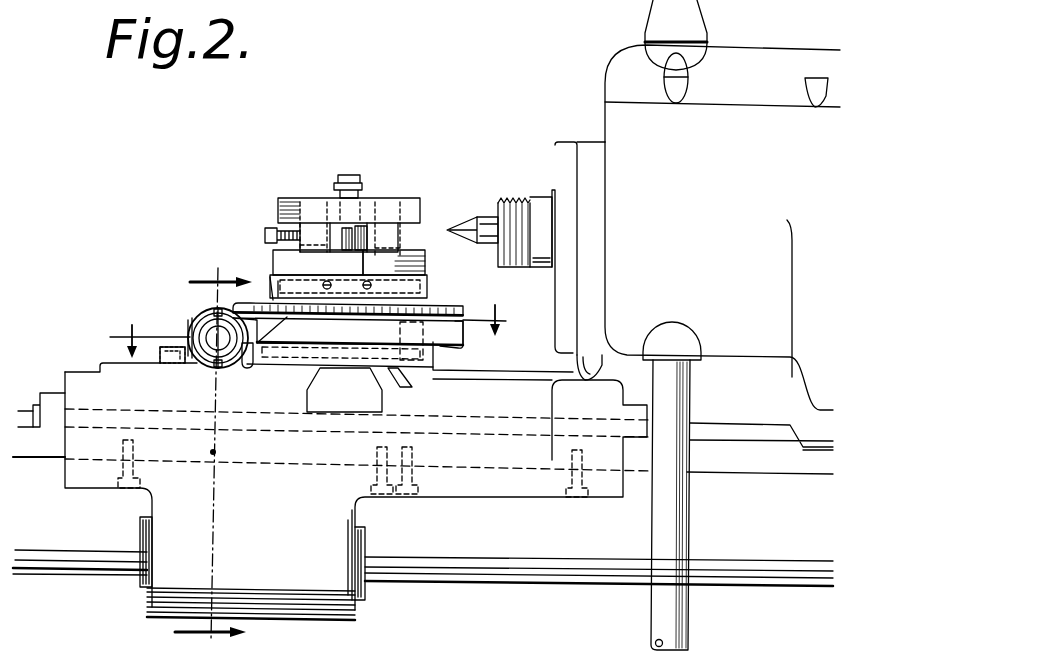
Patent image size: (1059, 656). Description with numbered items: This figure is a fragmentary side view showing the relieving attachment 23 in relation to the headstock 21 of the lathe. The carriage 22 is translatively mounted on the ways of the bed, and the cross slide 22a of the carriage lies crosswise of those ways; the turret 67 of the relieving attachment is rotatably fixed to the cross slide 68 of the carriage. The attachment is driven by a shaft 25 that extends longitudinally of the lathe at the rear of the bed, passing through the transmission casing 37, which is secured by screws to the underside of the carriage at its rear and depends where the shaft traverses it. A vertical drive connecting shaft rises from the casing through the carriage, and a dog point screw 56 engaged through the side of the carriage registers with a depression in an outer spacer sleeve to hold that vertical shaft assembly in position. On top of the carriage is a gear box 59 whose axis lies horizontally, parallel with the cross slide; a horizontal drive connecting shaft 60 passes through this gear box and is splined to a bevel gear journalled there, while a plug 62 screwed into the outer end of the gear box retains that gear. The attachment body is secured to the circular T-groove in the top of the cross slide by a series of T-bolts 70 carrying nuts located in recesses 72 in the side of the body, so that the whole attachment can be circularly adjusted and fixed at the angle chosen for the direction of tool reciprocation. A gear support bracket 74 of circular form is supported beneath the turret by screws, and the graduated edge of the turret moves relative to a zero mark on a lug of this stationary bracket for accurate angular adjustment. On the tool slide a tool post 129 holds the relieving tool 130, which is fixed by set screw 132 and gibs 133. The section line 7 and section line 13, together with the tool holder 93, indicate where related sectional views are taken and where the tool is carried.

The section line 7- 7 is at (213, 450).
The section line 13- 13 is at (308, 319).
The headstock 21 is at (605, 117).
The carriage 22 is at (485, 460).
The cross slide 22a is at (333, 368).
The relieving attachment 23 is at (431, 262).
The shaft 25 is at (497, 580).
The transmission casing 37 is at (342, 532).
The dog point screw 56 is at (216, 452).
The gear box 59 is at (209, 368).
The horizontal drive connecting shaft 60 is at (214, 357).
The plug 62 is at (226, 362).
The turret 67 is at (443, 311).
The cross slide 68 is at (376, 375).
The T-bolts 70 is at (262, 326).
The recesses 72 is at (277, 285).
The gear support bracket 74 is at (463, 341).
The tool holder 93 is at (375, 290).
The tool post 129 is at (322, 198).
The tool 130 is at (350, 230).
The set screw 132 is at (362, 190).
The gibs 133 is at (340, 262).